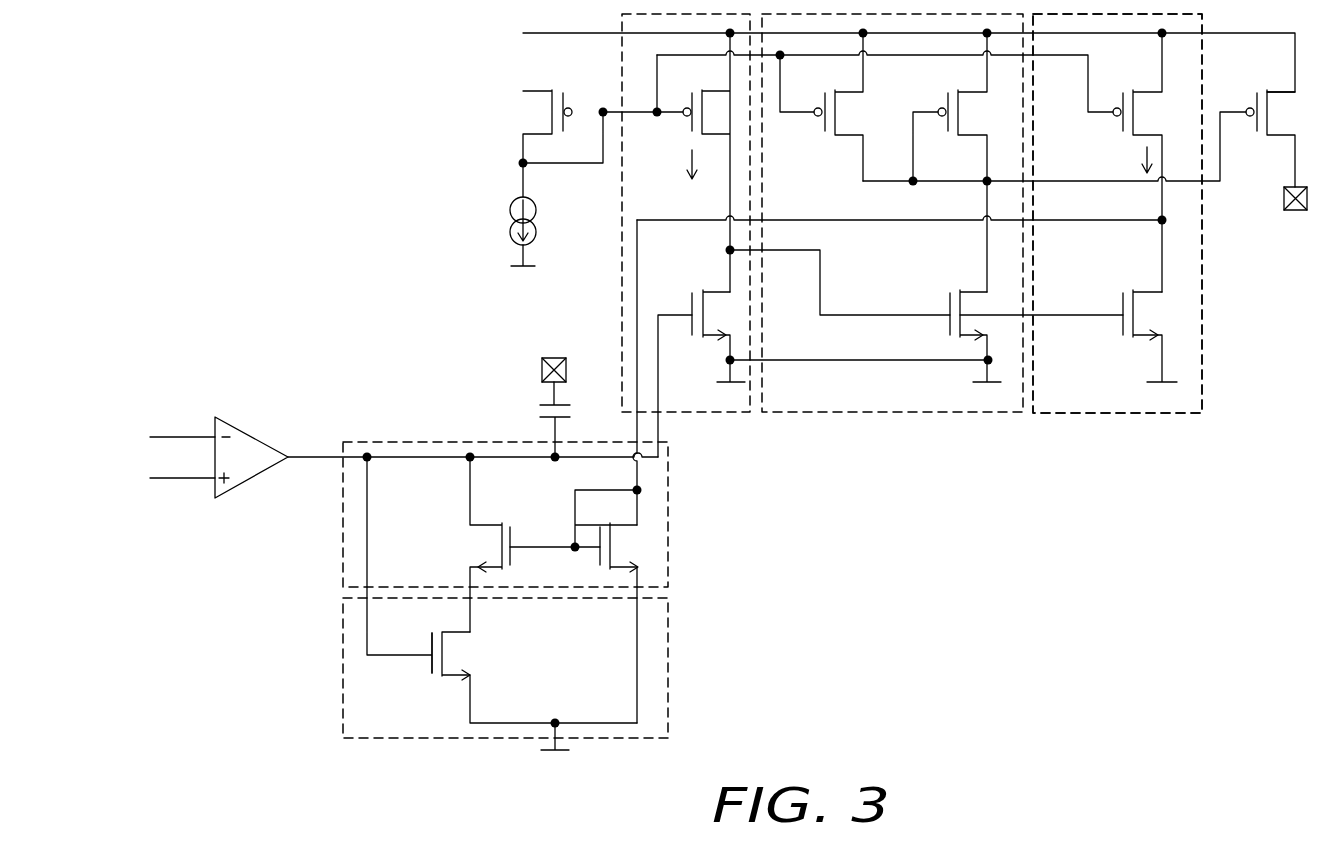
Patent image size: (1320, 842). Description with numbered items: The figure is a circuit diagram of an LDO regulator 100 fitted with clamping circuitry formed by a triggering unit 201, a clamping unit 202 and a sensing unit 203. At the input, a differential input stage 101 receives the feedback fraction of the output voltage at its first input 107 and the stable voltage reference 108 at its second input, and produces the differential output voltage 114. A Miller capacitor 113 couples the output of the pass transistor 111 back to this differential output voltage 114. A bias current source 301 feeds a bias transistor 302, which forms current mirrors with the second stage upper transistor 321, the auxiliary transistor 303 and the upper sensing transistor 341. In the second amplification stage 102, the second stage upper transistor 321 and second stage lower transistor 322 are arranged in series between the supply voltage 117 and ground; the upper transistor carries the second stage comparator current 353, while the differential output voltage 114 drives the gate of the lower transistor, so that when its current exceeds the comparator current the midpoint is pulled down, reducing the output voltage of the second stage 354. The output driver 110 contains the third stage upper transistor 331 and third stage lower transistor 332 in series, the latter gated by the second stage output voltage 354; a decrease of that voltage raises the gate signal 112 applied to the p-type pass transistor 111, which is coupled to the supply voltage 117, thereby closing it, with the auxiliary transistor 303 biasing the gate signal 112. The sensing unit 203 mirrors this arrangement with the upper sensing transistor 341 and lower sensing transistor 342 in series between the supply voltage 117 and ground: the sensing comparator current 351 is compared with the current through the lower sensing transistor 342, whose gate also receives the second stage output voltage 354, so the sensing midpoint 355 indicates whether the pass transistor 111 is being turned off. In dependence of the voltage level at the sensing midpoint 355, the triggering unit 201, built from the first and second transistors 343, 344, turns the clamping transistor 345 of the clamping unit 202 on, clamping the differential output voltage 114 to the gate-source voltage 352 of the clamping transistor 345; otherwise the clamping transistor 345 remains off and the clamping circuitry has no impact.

The LDO regulator 100 is at (336, 122).
The differential input stage 101 is at (251, 439).
The second amplification stage 102 is at (718, 413).
The first input 107 is at (170, 484).
The voltage reference 108 is at (171, 435).
The output driver 110 is at (911, 413).
The pass transistor 111 is at (1246, 104).
The gate signal 112 is at (1212, 184).
The Miller capacitor 113 is at (541, 413).
The differential output voltage 114 is at (312, 462).
The supply voltage 117 is at (522, 49).
The triggering unit 201 is at (669, 490).
The clamping unit 202 is at (669, 658).
The sensing unit 203 is at (1110, 414).
The bias current source 301 is at (510, 217).
The bias transistor 302 is at (540, 110).
The auxiliary transistor 303 is at (816, 129).
The second stage upper transistor 321 is at (700, 131).
The second stage lower transistor 322 is at (691, 289).
The third stage upper transistor 331 is at (940, 104).
The third stage lower transistor 332 is at (949, 289).
The upper sensing transistor 341 is at (1113, 104).
The lower sensing transistor 342 is at (1121, 288).
The first transistor of triggering unit 343 is at (624, 548).
The second transistor of triggering unit 344 is at (484, 546).
The clamping transistor 345 is at (458, 655).
The sensing comparator current Icomp 351 is at (1154, 158).
The gate-source voltage of clamping transistor 352 is at (430, 690).
The second stage comparator current I2c 353 is at (712, 182).
The output voltage of second stage 354 is at (851, 312).
The sensing midpoint 355 is at (1162, 220).